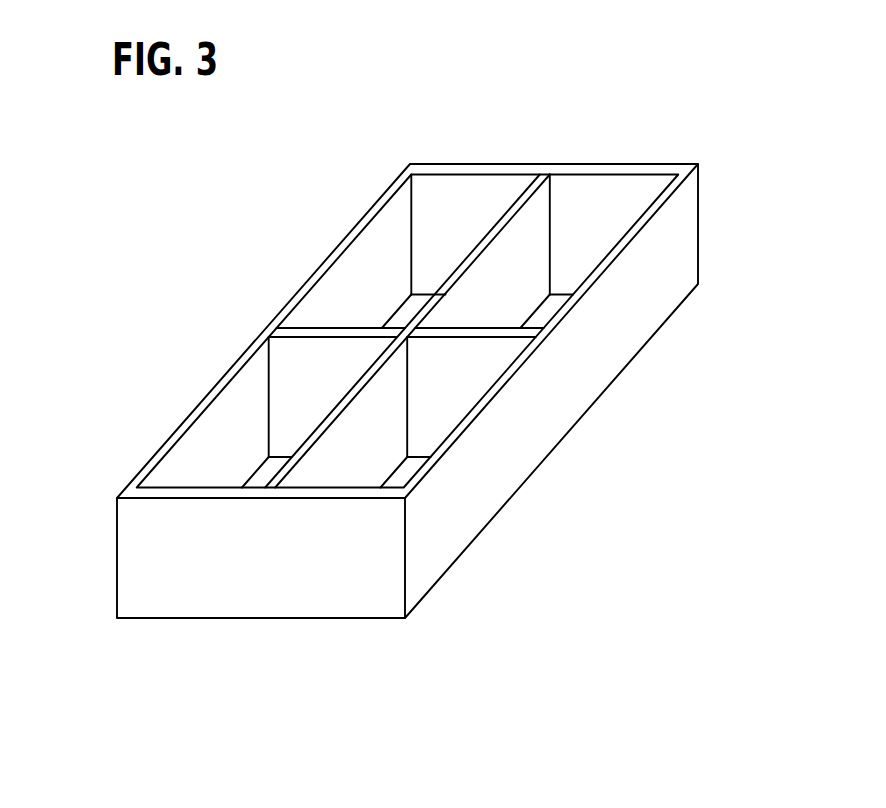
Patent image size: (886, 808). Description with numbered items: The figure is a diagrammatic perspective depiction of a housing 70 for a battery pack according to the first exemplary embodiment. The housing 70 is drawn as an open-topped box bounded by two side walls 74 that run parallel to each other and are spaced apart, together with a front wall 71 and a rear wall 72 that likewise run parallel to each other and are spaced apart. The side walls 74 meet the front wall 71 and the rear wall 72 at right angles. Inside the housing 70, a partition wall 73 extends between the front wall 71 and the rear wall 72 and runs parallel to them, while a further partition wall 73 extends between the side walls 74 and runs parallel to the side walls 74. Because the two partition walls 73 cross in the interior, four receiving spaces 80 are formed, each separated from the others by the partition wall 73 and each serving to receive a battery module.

The housing 70 is at (412, 395).
The front wall 71 is at (235, 598).
The rear wall 72 is at (641, 182).
The partition wall 73 is at (513, 257).
The side wall 74 is at (194, 461).
The receiving space 80 is at (370, 270).